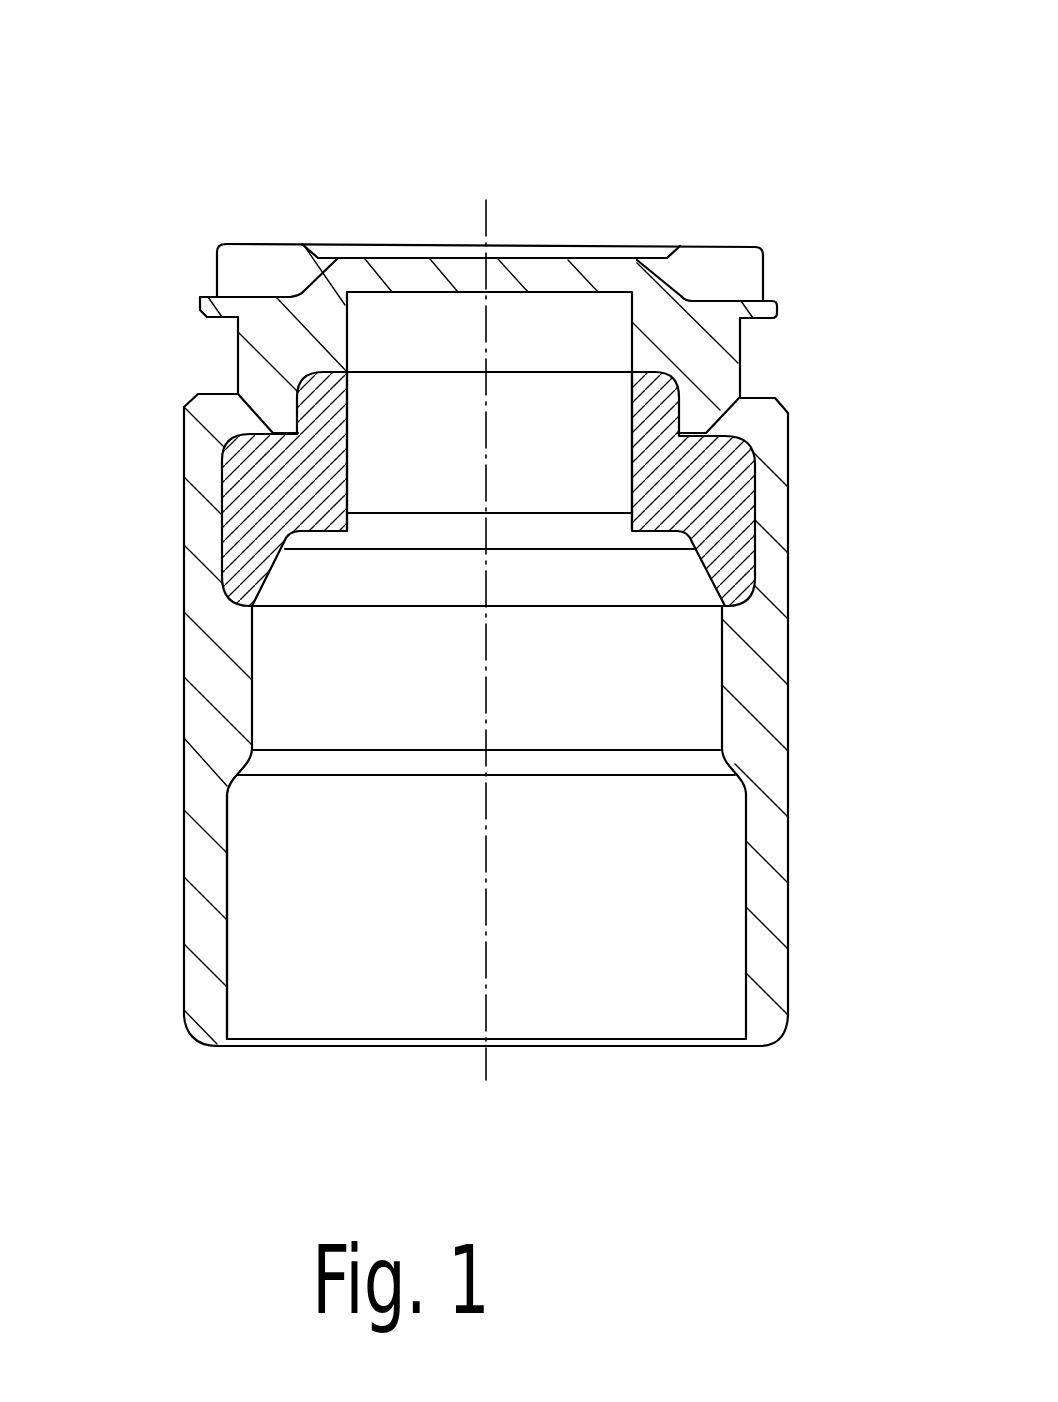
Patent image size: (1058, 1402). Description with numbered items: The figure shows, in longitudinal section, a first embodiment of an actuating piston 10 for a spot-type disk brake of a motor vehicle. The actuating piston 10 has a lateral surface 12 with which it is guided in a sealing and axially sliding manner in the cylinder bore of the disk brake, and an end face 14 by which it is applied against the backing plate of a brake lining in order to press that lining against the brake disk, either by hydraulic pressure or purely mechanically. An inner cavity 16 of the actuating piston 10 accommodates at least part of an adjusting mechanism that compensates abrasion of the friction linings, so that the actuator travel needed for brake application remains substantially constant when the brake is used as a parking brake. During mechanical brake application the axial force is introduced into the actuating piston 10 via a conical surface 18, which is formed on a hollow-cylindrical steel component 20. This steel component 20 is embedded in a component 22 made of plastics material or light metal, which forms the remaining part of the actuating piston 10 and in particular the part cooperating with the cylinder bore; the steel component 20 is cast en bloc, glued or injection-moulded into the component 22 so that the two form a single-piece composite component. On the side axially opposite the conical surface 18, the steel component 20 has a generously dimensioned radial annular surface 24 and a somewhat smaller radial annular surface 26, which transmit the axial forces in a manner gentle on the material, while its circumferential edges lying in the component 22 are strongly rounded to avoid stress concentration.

The actuating piston 10 is at (313, 185).
The lateral surface 12 is at (788, 786).
The end face 14 is at (705, 247).
The inner cavity 16 is at (227, 890).
The conical surface 18 is at (375, 597).
The hollow-cylindrical steel component 20 is at (285, 506).
The component made of plastics material or light metal 22 is at (211, 665).
The radial annular surface 24 is at (717, 412).
The radial annular surface 26 is at (650, 372).